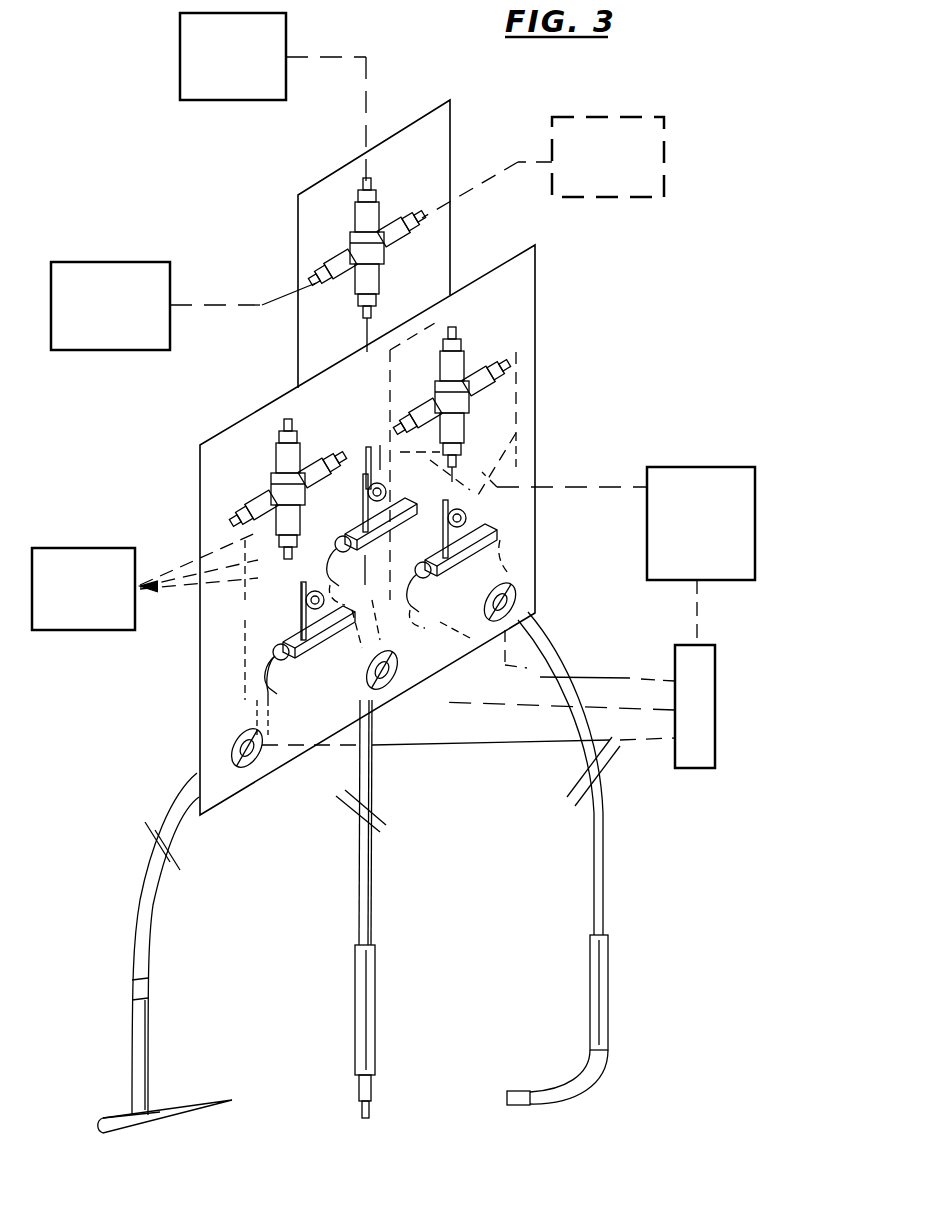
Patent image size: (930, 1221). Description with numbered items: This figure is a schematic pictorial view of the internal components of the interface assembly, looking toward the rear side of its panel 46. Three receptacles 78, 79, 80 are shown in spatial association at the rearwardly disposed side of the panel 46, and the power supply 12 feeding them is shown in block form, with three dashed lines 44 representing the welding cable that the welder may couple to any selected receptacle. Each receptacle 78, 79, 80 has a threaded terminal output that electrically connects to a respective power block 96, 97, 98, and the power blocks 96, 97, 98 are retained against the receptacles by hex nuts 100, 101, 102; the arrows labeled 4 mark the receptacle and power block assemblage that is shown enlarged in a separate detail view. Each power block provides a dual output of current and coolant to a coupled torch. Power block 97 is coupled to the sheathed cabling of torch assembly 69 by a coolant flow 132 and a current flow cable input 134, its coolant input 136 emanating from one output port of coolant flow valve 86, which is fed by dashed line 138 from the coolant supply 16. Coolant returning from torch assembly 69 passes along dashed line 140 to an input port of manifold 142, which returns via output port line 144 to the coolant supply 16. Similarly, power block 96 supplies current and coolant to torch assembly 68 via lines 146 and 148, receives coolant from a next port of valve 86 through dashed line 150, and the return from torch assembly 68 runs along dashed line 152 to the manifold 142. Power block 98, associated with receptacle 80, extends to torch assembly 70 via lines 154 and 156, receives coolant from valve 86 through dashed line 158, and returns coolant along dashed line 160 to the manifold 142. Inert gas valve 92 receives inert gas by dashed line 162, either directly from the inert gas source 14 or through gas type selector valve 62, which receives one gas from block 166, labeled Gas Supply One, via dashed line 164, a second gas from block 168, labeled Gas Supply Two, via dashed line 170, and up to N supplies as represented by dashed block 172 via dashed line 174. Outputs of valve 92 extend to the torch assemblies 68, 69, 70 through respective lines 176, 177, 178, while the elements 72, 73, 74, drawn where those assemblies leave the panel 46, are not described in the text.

The torch connector 4 is at (358, 466).
The power supply 12 is at (92, 540).
The inert gas source 14 is at (110, 148).
The coolant supply 16 is at (712, 458).
The cable 44 is at (190, 592).
The panel 46 is at (537, 330).
The gas type selector valve 62 is at (410, 192).
The torch assembly 68 is at (614, 1090).
The torch assembly 69 is at (376, 1010).
The torch assembly 70 is at (158, 1126).
The cable coupling 72 is at (540, 586).
The cable coupling 73 is at (400, 700).
The cable coupling 74 is at (258, 772).
The receptacle 78 is at (510, 522).
The receptacle 79 is at (379, 440).
The receptacle 80 is at (285, 648).
The coolant flow valve 86 is at (480, 342).
The inert gas valve 92 is at (272, 462).
The power block 96 is at (470, 566).
The power block 97 is at (386, 534).
The power block 98 is at (306, 668).
The hex nut 100 is at (470, 470).
The hex nut 101 is at (366, 447).
The hex nut 102 is at (298, 606).
The coolant flow line 132 is at (386, 640).
The current flow cable input 134 is at (372, 648).
The coolant input line 136 is at (388, 386).
The coolant feed line 138 is at (608, 487).
The coolant return line 140 is at (548, 706).
The manifold 142 is at (702, 770).
The output port line 144 is at (700, 612).
The current supply line 146 is at (474, 600).
The coolant supply line 148 is at (468, 634).
The coolant input line 150 is at (518, 380).
The coolant return line 152 is at (652, 682).
The output line 154 is at (272, 712).
The output line 156 is at (256, 714).
The coolant input line 158 is at (372, 586).
The coolant return line 160 is at (545, 742).
The inert gas input line 162 is at (315, 388).
The gas supply line 164 is at (262, 305).
The gas supply block 166 is at (112, 262).
The gas supply block 168 is at (180, 58).
The gas supply line 170 is at (368, 68).
The gas supply block 172 is at (620, 117).
The gas supply line 174 is at (512, 165).
The inert gas output line 176 is at (540, 556).
The inert gas output line 177 is at (298, 556).
The inert gas output line 178 is at (247, 658).